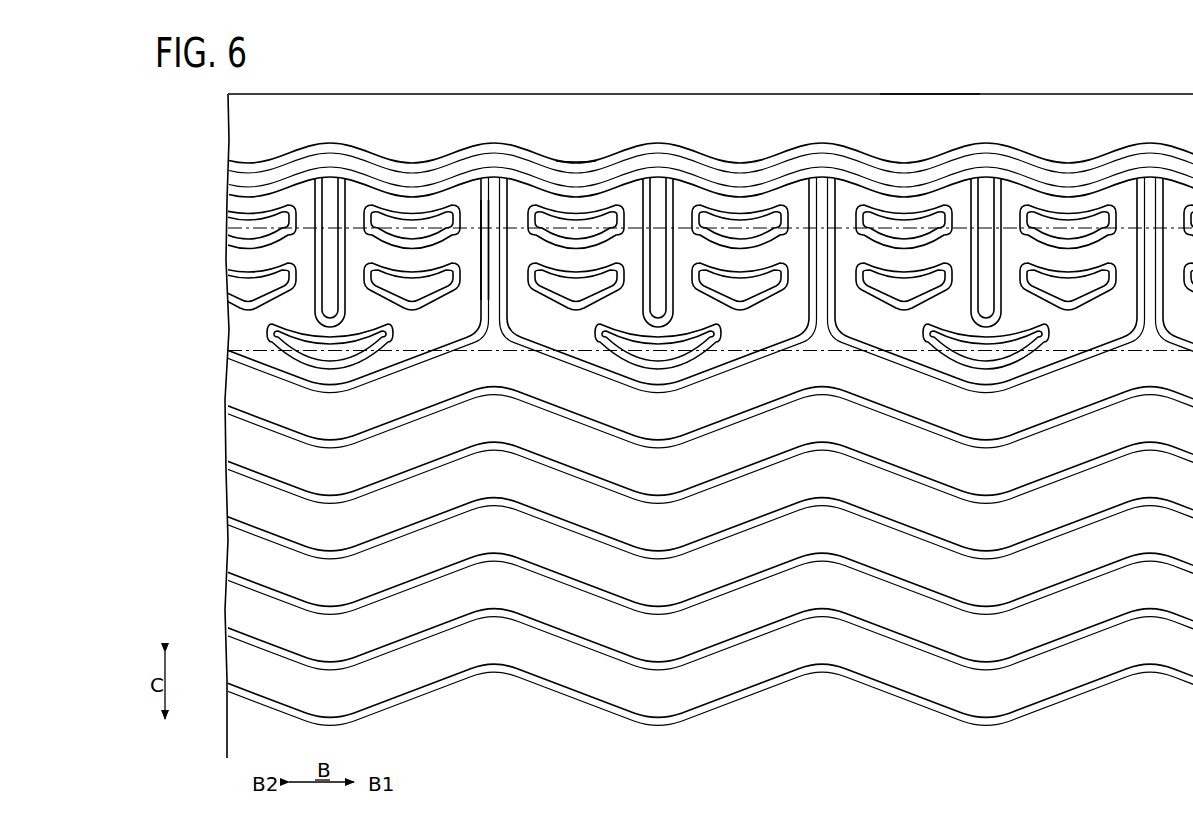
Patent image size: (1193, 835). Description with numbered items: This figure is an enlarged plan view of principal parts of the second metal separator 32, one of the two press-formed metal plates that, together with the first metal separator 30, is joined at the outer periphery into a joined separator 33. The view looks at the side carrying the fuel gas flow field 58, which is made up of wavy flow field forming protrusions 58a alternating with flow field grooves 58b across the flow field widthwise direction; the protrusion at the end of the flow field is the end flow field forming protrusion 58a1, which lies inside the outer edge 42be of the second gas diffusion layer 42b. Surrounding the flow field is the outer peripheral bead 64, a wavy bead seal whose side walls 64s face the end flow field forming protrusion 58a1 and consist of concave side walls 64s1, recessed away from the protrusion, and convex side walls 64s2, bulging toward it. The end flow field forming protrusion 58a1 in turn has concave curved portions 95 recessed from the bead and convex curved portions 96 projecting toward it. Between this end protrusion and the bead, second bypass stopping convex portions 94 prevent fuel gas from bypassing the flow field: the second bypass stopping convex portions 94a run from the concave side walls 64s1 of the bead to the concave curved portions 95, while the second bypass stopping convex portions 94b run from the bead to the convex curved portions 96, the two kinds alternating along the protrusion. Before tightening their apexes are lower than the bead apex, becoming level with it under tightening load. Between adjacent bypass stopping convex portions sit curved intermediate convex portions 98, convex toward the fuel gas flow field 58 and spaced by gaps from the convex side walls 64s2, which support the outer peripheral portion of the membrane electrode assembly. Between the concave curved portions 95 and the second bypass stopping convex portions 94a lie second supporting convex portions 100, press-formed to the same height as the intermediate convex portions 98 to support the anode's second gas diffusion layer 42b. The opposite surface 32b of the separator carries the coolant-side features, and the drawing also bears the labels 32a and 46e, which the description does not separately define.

The first metal separator 30 is at (1130, 92).
The second metal separator 32 is at (1093, 92).
The first separator plate surface 32a is at (907, 112).
The surface 32b is at (947, 112).
The joined separator 33 is at (335, 65).
The second gas diffusion layer 42b is at (433, 227).
The outer edge 42be is at (630, 228).
The flow field end portion 46e is at (800, 352).
The fuel gas flow field 58 is at (912, 618).
The flow field forming protrusions 58a is at (668, 546).
The end flow field forming protrusions 58a1 is at (1052, 385).
The flow field grooves 58b is at (883, 447).
The outer peripheral bead 64 is at (935, 173).
The side walls 64s is at (700, 180).
The concave side walls 64s1 is at (490, 175).
The convex side walls 64s2 is at (571, 190).
The second bypass stopping convex portions 94 is at (681, 194).
The second bypass stopping convex portions 94a is at (332, 183).
The second bypass stopping convex portions 94b is at (523, 185).
The concave curved portions 95 is at (653, 408).
The convex curved portions 96 is at (498, 357).
The intermediate convex portions 98 is at (588, 287).
The second supporting convex portions 100 is at (672, 355).